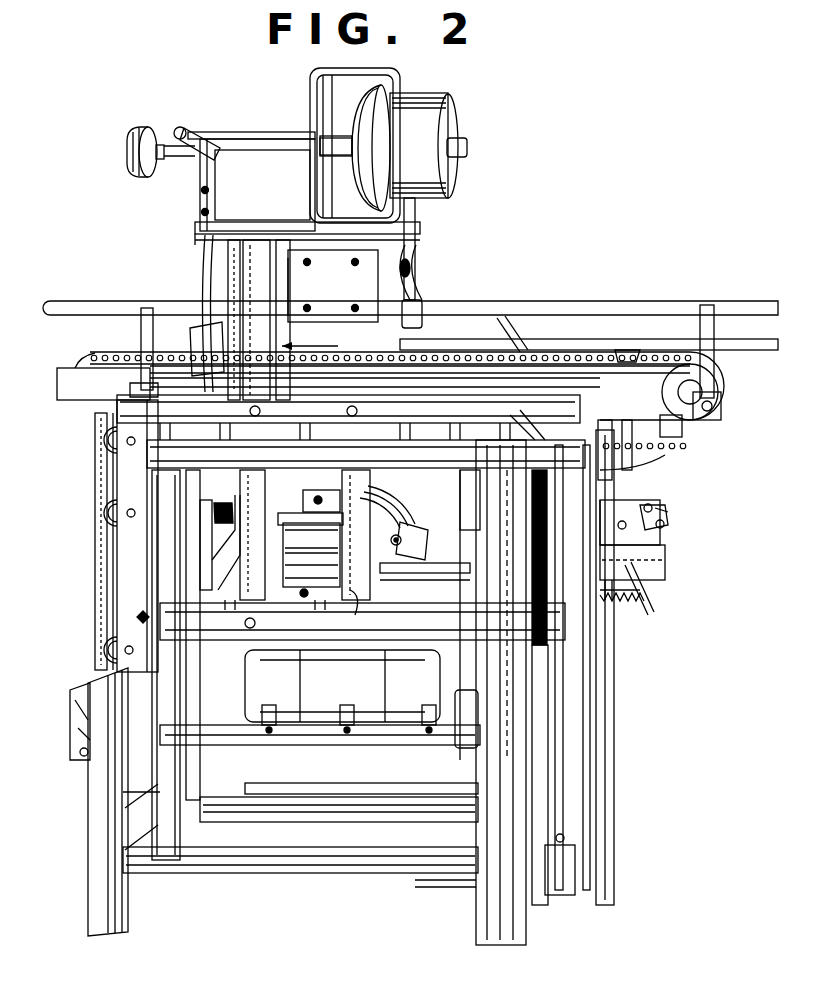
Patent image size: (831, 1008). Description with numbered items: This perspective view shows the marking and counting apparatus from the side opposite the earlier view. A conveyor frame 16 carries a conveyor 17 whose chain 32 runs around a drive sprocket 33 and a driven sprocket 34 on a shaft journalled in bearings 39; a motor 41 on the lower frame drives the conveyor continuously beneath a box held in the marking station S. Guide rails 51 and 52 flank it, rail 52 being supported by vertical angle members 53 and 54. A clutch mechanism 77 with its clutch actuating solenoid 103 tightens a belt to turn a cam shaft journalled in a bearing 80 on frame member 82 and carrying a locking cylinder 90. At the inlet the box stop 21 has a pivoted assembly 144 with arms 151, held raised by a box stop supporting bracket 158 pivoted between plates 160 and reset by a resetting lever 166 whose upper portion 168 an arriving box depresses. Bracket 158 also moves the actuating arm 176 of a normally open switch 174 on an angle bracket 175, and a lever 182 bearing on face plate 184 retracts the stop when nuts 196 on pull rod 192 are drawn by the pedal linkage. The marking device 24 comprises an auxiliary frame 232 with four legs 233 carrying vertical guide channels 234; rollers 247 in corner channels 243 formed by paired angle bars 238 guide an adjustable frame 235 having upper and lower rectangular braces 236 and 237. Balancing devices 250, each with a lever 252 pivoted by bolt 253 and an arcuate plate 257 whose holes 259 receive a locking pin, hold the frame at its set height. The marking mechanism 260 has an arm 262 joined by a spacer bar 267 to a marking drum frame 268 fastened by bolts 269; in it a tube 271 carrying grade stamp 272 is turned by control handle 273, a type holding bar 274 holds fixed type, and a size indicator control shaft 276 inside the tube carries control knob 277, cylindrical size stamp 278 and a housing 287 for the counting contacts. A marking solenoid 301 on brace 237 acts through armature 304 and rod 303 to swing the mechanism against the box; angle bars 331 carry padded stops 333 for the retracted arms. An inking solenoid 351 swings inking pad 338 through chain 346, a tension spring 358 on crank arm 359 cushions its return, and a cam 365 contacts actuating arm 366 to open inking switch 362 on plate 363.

The conveyor frame 16 is at (616, 676).
The conveyor 17 is at (654, 354).
The box stop 21 is at (626, 347).
The marking device 24 is at (470, 118).
The marking station S is at (470, 197).
The chain 32 is at (667, 458).
The drive sprocket 33 is at (128, 366).
The driven sprocket 34 is at (670, 444).
The bearings 39 is at (668, 416).
The motor 41 is at (320, 697).
The guide rail 51 is at (722, 350).
The guide rail 52 is at (526, 308).
The vertical angle member 53 is at (716, 372).
The vertical angle member 54 is at (142, 320).
The clutch mechanism 77 is at (436, 536).
The bearing 80 is at (388, 565).
The frame member 82 is at (432, 572).
The locking cylinder 90 is at (396, 522).
The clutch actuating solenoid 103 is at (470, 748).
The pivotally mounted assembly 144 is at (604, 420).
The upwardly extending arm 151 is at (627, 422).
The box stop supporting bracket 158 is at (615, 488).
The spaced parallel plates 160 is at (605, 515).
The resetting lever 166 is at (500, 318).
The upper portion 168 is at (518, 345).
The normally open switch 174 is at (660, 545).
The angle bracket 175 is at (650, 590).
The actuating arm 176 is at (668, 523).
The lever 182 is at (655, 615).
The face plate 184 is at (665, 532).
The pull rod 192 is at (650, 598).
The nuts 196 is at (650, 596).
The auxiliary frame 232 is at (473, 890).
The supporting legs 233 is at (103, 775).
The vertical guide channel 234 is at (104, 578).
The adjustable frame 235 is at (137, 558).
The upper rectangular brace 236 is at (348, 393).
The lower rectangular brace 237 is at (362, 622).
The vertical angle bars 238 is at (497, 428).
The channel 243 is at (506, 420).
The rollers 247 is at (104, 508).
The balancing devices 250 is at (555, 600).
The lever 252 is at (80, 752).
The bolt 253 is at (78, 740).
The plate 257 is at (80, 705).
The holes 259 is at (75, 712).
The marking mechanism 260 is at (418, 216).
The arm 262 is at (265, 229).
The spacer bar 267 is at (272, 222).
The marking drum frame 268 is at (309, 95).
The bolts 269 is at (203, 212).
The tube 271 is at (275, 151).
The grade stamp 272 is at (342, 172).
The control handle 273 is at (181, 127).
The type holding bar 274 is at (258, 132).
The size indicator control shaft 276 is at (165, 147).
The control knob 277 is at (140, 127).
The cylindrical size stamp 278 is at (362, 95).
The housing 287 is at (440, 93).
The marking solenoid 301 is at (324, 542).
The rod 303 is at (332, 476).
The armature 304 is at (305, 492).
The vertically extending angle bars 331 is at (266, 618).
The padded stops 333 is at (192, 342).
The inking pad 338 is at (412, 302).
The chain 346 is at (205, 262).
The inking solenoid 351 is at (200, 570).
The tension spring 358 is at (414, 270).
The crank arm 359 is at (420, 252).
The inking switch 362 is at (290, 286).
The plate 363 is at (327, 320).
The cam 365 is at (284, 248).
The actuating arm 366 is at (290, 270).